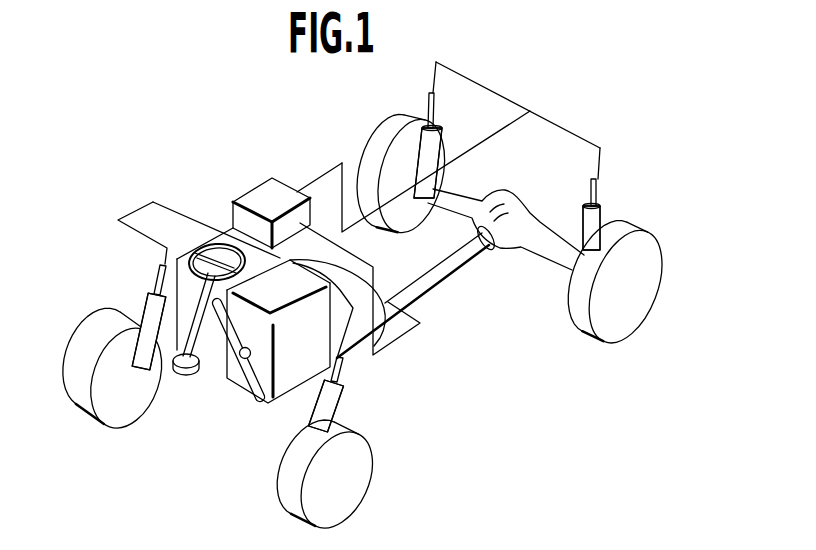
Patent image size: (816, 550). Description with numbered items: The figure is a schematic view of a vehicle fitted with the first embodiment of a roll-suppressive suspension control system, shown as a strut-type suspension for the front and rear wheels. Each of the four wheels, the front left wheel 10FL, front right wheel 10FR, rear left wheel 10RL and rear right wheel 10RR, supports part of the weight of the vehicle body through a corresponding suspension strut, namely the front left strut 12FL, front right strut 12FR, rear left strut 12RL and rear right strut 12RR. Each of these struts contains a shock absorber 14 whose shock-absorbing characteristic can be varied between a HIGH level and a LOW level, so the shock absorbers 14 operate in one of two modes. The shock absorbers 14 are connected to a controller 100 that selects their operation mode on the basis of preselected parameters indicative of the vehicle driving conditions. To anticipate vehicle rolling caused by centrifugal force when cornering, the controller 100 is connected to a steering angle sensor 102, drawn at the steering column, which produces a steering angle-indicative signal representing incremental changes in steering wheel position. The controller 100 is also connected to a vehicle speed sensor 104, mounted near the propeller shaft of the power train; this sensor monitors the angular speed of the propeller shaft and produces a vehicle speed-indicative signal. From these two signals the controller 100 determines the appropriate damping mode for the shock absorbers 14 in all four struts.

The controller 100 is at (268, 183).
The steering angle sensor 102 is at (196, 378).
The vehicle speed sensor 104 is at (405, 304).
The rear right wheel 10RR is at (377, 147).
The rear left wheel 10RL is at (611, 333).
The front right wheel 10FR is at (135, 415).
The front left wheel 10FL is at (367, 449).
The rear right suspension strut 12RR is at (439, 157).
The rear left suspension strut 12RL is at (602, 218).
The front right suspension strut 12FR is at (147, 313).
The front left suspension strut 12FL is at (342, 400).
The shock absorber 14 is at (434, 141).